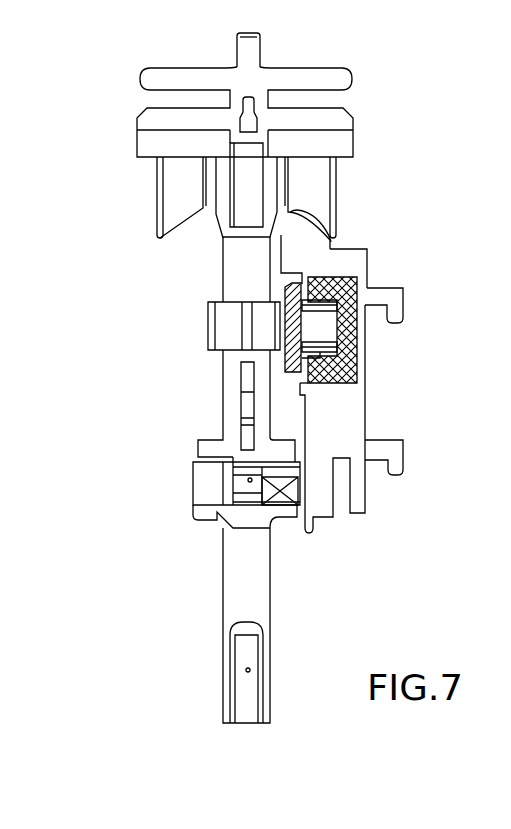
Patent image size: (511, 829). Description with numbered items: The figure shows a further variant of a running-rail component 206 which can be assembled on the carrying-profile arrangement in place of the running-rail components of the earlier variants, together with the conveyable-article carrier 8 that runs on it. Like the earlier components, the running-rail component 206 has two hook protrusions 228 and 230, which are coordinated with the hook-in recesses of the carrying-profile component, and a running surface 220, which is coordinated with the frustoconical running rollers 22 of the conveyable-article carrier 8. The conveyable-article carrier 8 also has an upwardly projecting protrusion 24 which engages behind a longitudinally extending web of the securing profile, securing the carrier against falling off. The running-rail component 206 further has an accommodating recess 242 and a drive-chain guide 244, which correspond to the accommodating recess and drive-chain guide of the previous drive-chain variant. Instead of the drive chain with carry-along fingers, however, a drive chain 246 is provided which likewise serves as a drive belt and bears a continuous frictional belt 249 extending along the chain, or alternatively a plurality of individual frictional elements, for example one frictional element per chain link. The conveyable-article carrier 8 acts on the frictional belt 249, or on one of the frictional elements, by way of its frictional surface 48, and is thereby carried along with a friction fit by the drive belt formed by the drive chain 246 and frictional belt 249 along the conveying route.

The conveyable-article carrier 8 is at (233, 280).
The running rollers 22 is at (315, 203).
The upwardly projecting protrusion 24 is at (245, 42).
The frictional surface 48 is at (237, 329).
The running-rail component 206 is at (352, 413).
The running surface 220 is at (315, 220).
The hook protrusion 228 is at (395, 297).
The hook protrusion 230 is at (397, 452).
The accommodating recess 242 is at (356, 350).
The drive-chain guide 244 is at (356, 323).
The drive chain 246 is at (300, 373).
The frictional belt 249 is at (270, 360).